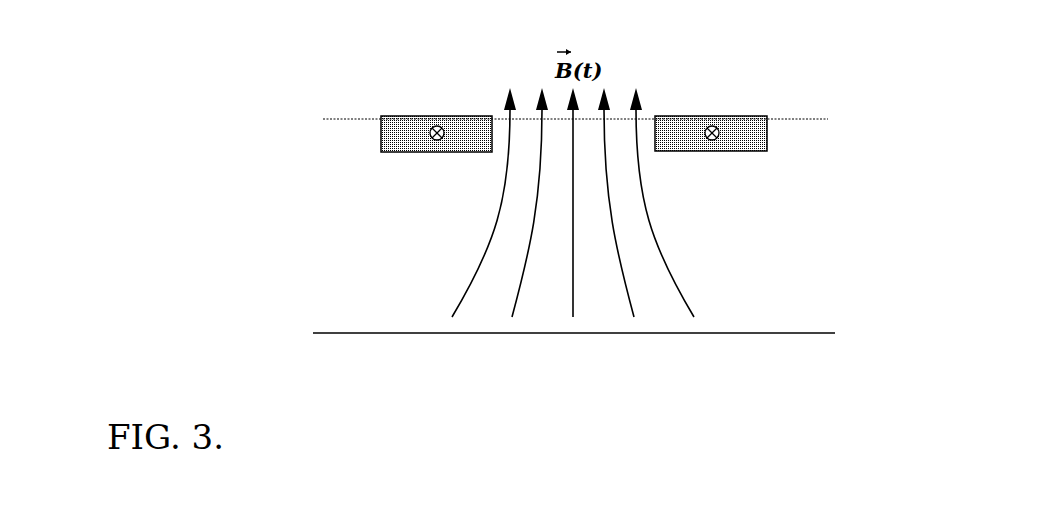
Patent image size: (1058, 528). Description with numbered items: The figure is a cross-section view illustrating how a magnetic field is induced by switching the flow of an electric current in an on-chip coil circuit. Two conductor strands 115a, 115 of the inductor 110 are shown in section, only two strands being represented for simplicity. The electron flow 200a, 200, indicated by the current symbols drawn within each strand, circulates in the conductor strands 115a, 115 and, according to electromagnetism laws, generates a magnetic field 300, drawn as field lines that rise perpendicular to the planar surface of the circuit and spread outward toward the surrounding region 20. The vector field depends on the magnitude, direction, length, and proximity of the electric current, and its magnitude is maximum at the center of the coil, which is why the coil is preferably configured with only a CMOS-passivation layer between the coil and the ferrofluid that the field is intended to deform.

The target surface / workpiece 20 is at (772, 222).
The inductor 110 is at (388, 165).
The conductor strand 115 is at (770, 118).
The conductor strand 115a is at (380, 133).
The electron flow 200 is at (713, 118).
The electron flow 200a is at (418, 115).
The magnetic field 300 is at (528, 220).